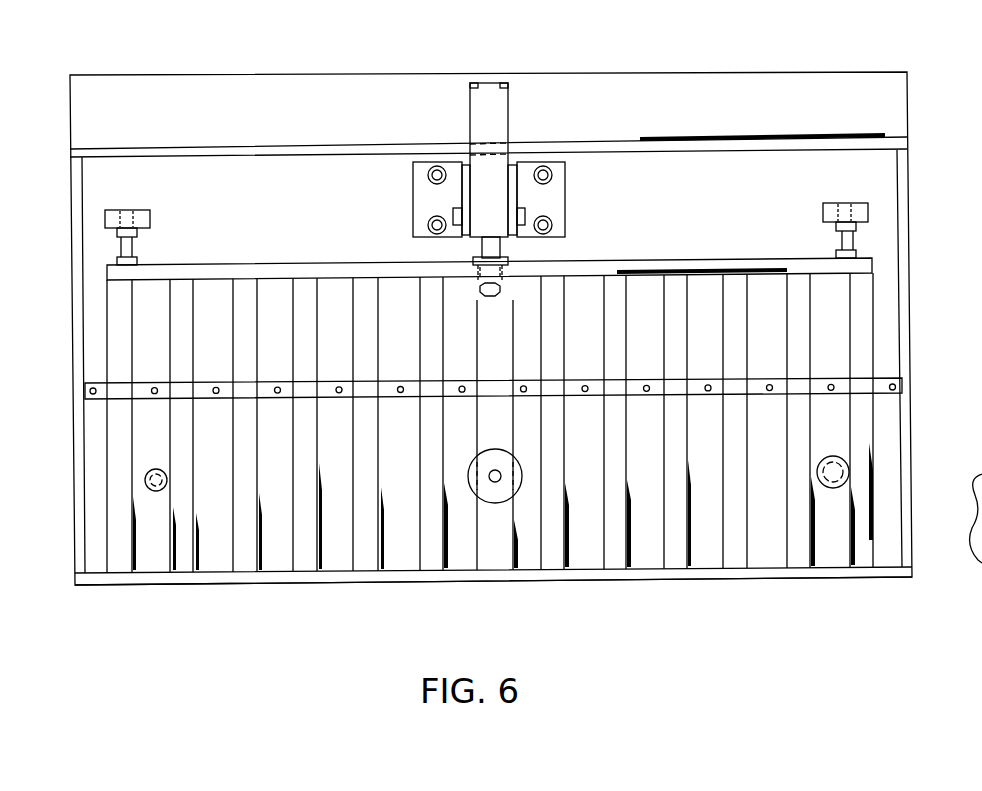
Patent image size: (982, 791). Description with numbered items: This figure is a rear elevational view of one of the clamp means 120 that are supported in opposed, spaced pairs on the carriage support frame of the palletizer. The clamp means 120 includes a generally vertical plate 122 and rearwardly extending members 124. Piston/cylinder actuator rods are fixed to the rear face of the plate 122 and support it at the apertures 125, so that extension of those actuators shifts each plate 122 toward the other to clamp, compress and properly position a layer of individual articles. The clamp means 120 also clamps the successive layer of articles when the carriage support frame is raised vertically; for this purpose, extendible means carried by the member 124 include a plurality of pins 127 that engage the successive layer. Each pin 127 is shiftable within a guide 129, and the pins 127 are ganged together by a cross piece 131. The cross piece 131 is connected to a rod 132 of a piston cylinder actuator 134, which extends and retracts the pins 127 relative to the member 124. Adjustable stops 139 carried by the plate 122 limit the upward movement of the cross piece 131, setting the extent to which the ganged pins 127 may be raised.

The clamp means 120 is at (299, 66).
The vertical plate 122 is at (758, 190).
The rearwardly extending members 124 is at (720, 142).
The apertures 125 is at (156, 491).
The pins 127 is at (392, 306).
The guide 129 is at (867, 385).
The cross piece 131 is at (770, 264).
The rod 132 is at (500, 246).
The piston cylinder actuator 134 is at (574, 192).
The adjustable stops 139 is at (150, 216).